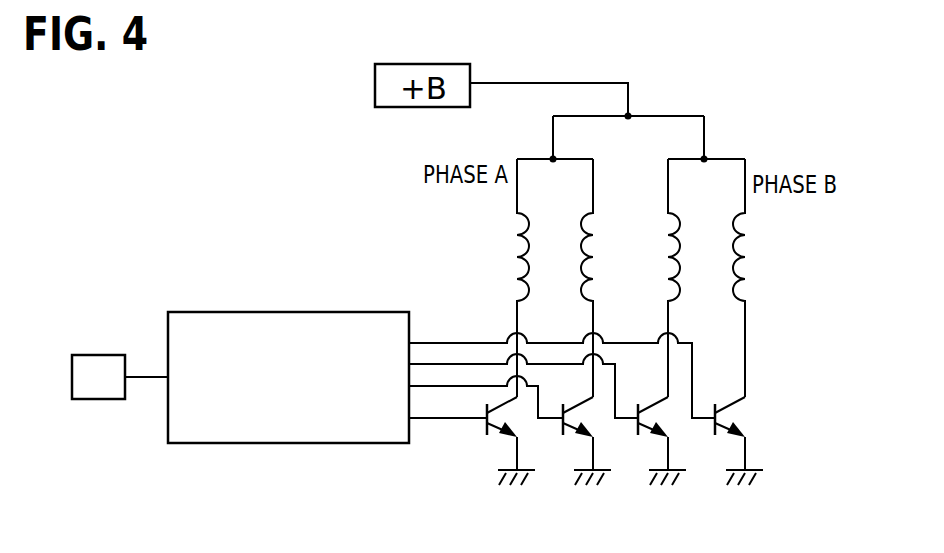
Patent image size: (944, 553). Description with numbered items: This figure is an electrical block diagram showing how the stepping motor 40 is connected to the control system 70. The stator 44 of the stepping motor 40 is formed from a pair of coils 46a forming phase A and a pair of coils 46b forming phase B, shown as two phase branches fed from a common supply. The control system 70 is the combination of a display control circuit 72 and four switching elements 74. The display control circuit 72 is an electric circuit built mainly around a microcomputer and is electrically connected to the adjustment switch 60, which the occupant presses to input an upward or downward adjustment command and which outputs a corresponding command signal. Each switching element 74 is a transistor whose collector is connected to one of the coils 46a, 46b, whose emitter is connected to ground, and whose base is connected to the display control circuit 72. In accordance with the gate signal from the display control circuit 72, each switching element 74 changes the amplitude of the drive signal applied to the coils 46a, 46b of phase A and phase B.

The stepping motor 40 is at (637, 242).
The stator 44 is at (755, 160).
The coils 46a is at (519, 225).
The coils 46b is at (670, 269).
The adjustment switch 60 is at (98, 400).
The control system 70 is at (199, 285).
The display control circuit 72 is at (286, 443).
The switching element 74 is at (490, 430).